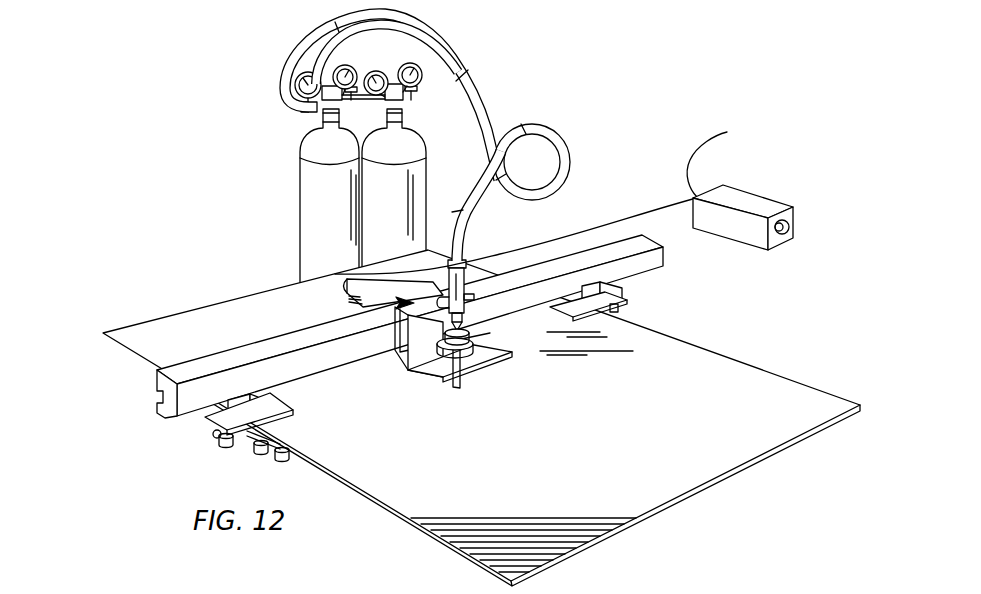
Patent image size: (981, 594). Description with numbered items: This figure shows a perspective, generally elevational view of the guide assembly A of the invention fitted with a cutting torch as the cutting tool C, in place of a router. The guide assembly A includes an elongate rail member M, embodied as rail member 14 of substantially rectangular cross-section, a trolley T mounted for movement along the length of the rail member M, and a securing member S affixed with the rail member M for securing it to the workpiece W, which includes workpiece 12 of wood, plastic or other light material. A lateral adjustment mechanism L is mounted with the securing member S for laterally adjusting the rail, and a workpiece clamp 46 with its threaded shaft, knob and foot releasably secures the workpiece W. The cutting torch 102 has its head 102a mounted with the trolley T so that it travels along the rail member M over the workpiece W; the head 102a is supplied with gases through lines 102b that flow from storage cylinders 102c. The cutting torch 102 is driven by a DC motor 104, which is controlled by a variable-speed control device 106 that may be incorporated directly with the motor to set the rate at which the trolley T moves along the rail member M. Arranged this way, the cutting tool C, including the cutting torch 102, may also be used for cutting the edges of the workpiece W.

The workpiece 12 is at (765, 382).
The rail member 14 is at (166, 389).
The workpiece clamp 46 is at (282, 465).
The cutting torch 102 is at (440, 35).
The head of the cutting torch 102a is at (470, 262).
The lines 102b is at (472, 82).
The storage cylinders 102c is at (320, 194).
The DC motor 104 is at (352, 290).
The variable-speed control device 106 is at (773, 196).
The guide assembly A is at (147, 238).
The cutting tool C is at (553, 127).
The trolley T is at (398, 304).
The securing member S is at (210, 418).
The lateral adjustment mechanism L is at (214, 433).
The rail member M is at (669, 248).
The workpiece W is at (524, 469).